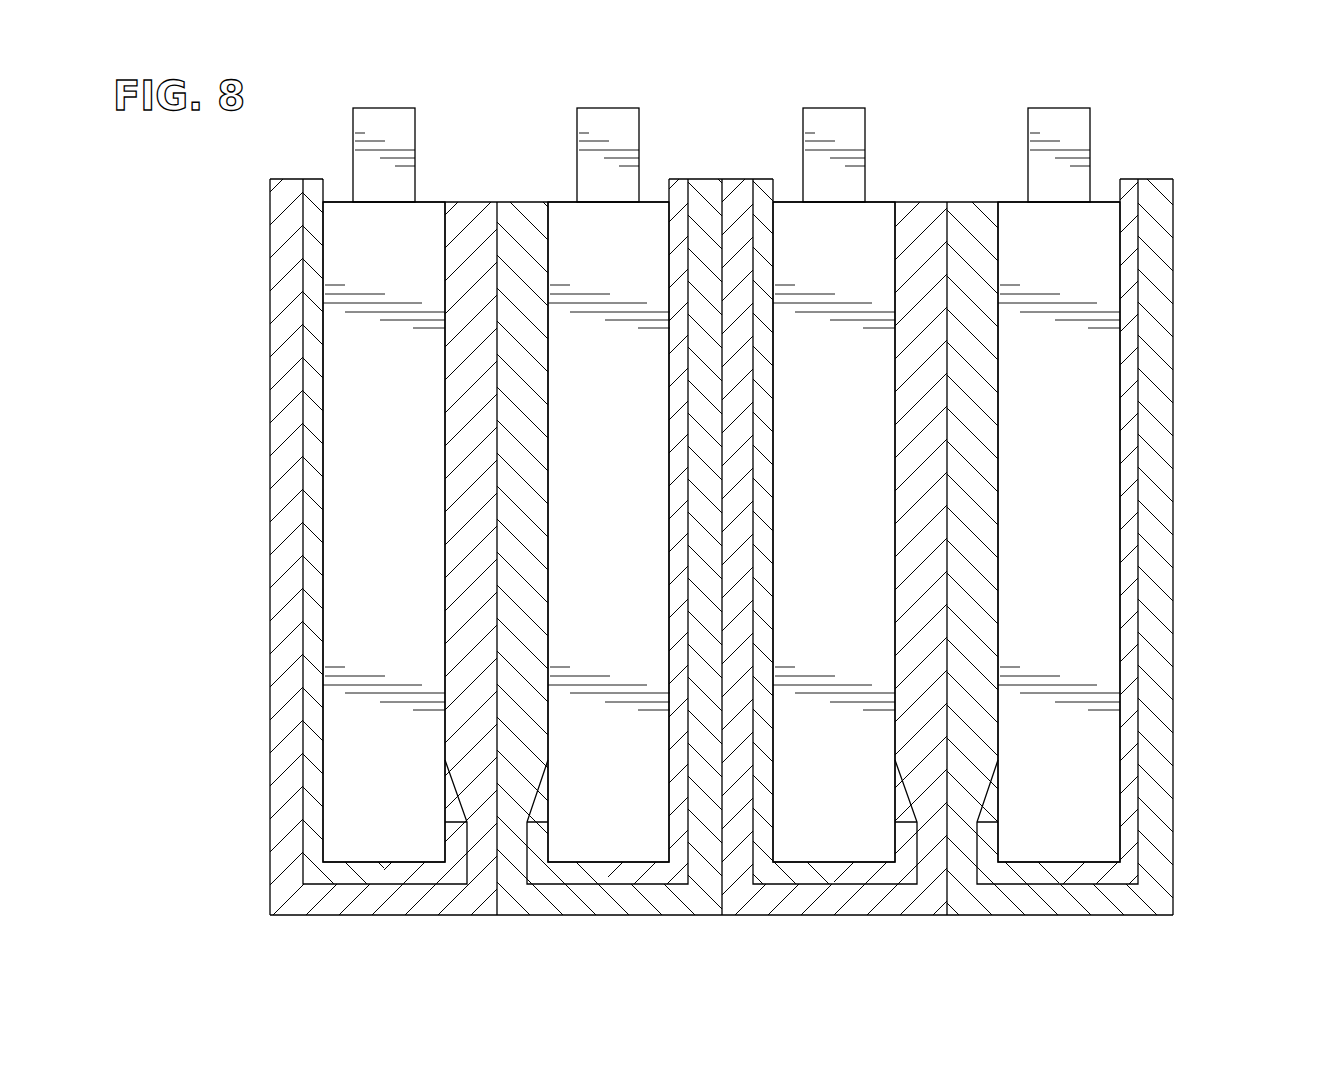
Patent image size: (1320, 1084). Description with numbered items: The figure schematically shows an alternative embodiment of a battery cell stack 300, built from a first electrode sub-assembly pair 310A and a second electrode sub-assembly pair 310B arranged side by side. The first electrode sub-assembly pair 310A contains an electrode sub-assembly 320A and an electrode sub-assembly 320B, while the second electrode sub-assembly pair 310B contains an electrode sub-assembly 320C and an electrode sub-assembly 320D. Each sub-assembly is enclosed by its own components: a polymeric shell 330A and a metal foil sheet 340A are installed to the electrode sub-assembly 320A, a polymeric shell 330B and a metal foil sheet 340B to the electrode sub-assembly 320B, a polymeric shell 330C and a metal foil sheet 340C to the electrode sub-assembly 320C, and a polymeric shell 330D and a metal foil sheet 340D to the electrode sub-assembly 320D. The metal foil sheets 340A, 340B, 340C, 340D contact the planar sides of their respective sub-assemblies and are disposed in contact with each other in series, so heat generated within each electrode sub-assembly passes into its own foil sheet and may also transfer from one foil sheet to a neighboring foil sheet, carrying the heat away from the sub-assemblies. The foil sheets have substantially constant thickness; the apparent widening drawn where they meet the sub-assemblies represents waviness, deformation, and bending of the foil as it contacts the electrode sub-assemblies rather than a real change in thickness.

The battery cell stack 300 is at (1200, 163).
The first electrode sub-assembly pair 310A is at (717, 97).
The second electrode sub-assembly pair 310B is at (1160, 97).
The electrode sub-assembly 320A is at (361, 510).
The electrode sub-assembly 320B is at (580, 510).
The electrode sub-assembly 320C is at (809, 510).
The electrode sub-assembly 320D is at (1044, 510).
The polymeric shell 330A is at (363, 880).
The polymeric shell 330B is at (570, 880).
The polymeric shell 330C is at (813, 880).
The polymeric shell 330D is at (1037, 880).
The metal foil sheet 340A is at (428, 903).
The metal foil sheet 340B is at (631, 902).
The metal foil sheet 340C is at (877, 902).
The metal foil sheet 340D is at (1100, 902).